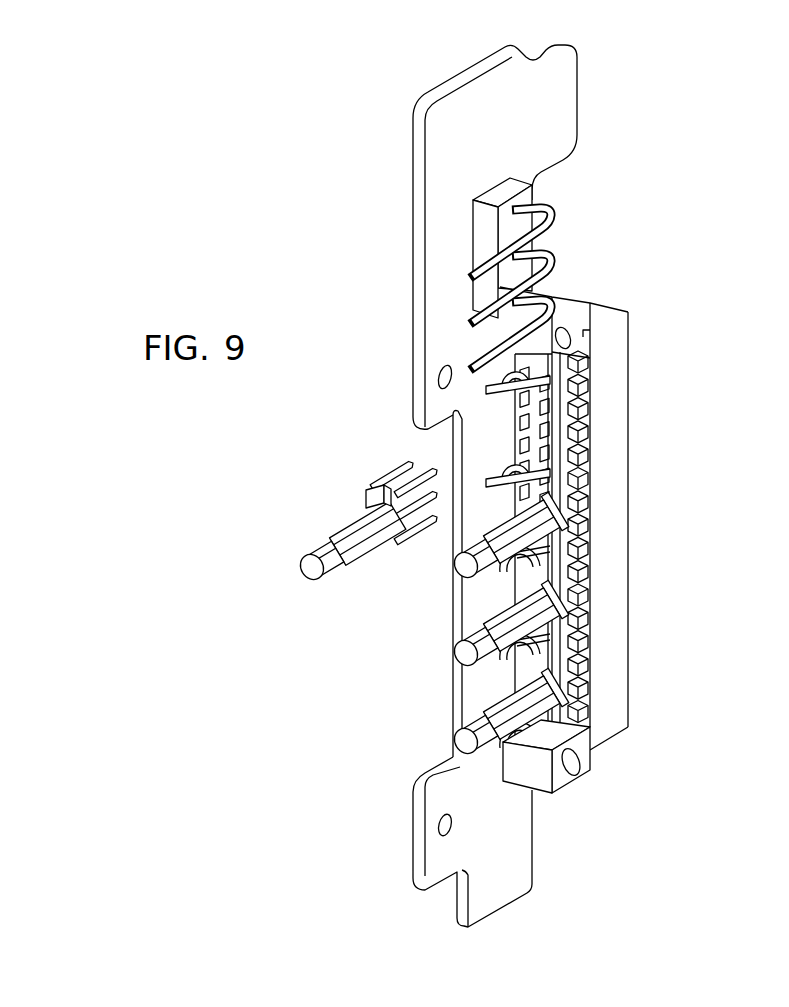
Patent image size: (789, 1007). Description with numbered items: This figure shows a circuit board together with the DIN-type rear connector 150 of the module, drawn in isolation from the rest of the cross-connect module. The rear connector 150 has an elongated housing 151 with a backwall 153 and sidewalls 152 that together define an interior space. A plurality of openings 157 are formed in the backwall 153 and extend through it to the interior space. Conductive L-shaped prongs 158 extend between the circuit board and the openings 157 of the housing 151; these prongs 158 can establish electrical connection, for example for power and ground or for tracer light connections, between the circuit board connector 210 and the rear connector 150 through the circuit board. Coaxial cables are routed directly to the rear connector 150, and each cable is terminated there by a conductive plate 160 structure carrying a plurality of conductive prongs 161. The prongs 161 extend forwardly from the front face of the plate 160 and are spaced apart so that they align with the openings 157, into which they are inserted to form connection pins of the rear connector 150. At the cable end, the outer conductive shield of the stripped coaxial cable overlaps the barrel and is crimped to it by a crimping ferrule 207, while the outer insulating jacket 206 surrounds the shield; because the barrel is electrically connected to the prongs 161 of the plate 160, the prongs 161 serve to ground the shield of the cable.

The rear connector 150 is at (664, 405).
The elongated housing 151 is at (626, 563).
The sidewalls 152 is at (614, 312).
The backwall 153 is at (552, 727).
The openings 157 is at (548, 432).
The L-shaped prongs 158 is at (497, 389).
The conductive plate 160 is at (372, 495).
The conductive prongs 161 is at (422, 528).
The outer insulating jacket 206 is at (307, 573).
The crimping ferrule 207 is at (362, 553).
The circuit board connector 210 is at (548, 242).